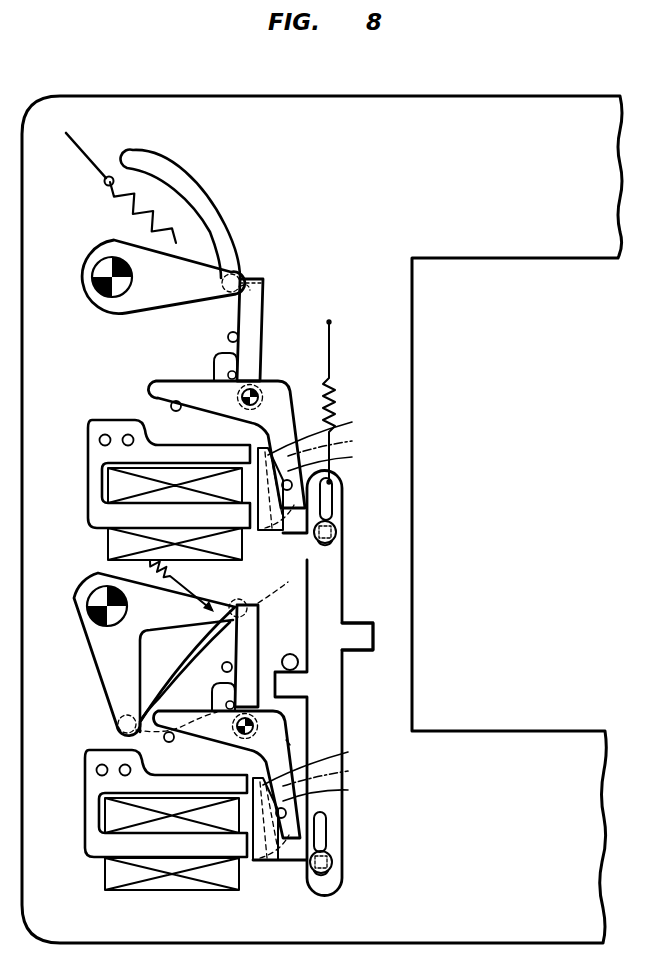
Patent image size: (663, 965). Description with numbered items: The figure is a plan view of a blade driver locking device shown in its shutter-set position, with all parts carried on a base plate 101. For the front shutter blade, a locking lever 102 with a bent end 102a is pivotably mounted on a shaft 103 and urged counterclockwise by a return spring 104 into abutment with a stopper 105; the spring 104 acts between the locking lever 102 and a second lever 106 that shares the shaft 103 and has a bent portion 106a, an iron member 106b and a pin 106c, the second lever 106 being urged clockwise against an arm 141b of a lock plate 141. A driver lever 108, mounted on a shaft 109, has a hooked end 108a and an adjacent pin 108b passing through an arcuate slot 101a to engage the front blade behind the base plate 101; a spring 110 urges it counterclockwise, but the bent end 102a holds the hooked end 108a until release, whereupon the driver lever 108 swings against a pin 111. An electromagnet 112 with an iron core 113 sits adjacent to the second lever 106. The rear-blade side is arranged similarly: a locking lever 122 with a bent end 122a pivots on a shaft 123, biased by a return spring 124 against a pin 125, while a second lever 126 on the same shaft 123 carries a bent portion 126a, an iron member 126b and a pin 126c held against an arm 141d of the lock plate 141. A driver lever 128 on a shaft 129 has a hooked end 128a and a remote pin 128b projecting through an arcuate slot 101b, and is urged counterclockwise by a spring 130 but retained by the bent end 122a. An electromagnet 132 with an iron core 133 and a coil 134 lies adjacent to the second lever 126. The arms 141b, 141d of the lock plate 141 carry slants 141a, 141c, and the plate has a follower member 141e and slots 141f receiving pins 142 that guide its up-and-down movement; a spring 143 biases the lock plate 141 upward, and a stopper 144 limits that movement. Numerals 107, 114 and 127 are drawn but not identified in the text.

The base plate 101 is at (433, 102).
The arcuate slot 101a is at (185, 178).
The arcuate slot 101b is at (190, 690).
The locking lever 102 is at (250, 312).
The bent end 102a is at (252, 280).
The shaft 103 is at (264, 405).
The return spring 104 is at (262, 388).
The stopper 105 is at (228, 335).
The second lever 106 is at (226, 408).
The bent portion 106a is at (222, 366).
The iron member 106b is at (328, 429).
The pin 106c is at (338, 461).
The pin 107 is at (176, 411).
The driver lever 108 is at (150, 292).
The hooked end 108a is at (246, 280).
The pin 108b is at (233, 274).
The shaft 109 is at (96, 268).
The spring 110 is at (130, 208).
The pin 111 is at (104, 186).
The electromagnet 112 is at (141, 463).
The iron core 113 is at (100, 515).
The electromagnet coil 114 is at (158, 475).
The locking lever 122 is at (252, 622).
The bent end 122a is at (278, 581).
The shaft 123 is at (250, 740).
The return spring 124 is at (293, 706).
The pin 125 is at (222, 662).
The second lever 126 is at (225, 736).
The bent portion 126a is at (224, 712).
The iron member 126b is at (324, 758).
The pin 126c is at (334, 795).
The pin 127 is at (164, 741).
The driver lever 128 is at (95, 650).
The hooked end 128a is at (241, 595).
The pin 128b is at (118, 727).
The shaft 129 is at (92, 598).
The spring 130 is at (168, 570).
The electromagnet 132 is at (132, 842).
The iron core 133 is at (98, 846).
The coil 134 is at (166, 891).
The lock plate 141 is at (322, 586).
The slant 141a is at (338, 441).
The arm 141b is at (272, 504).
The slant 141c is at (334, 771).
The arm 141d is at (268, 858).
The follower member 141e is at (358, 645).
The slot 141f is at (332, 502).
The pin 142 is at (337, 533).
The spring 143 is at (336, 404).
The stopper 144 is at (290, 654).